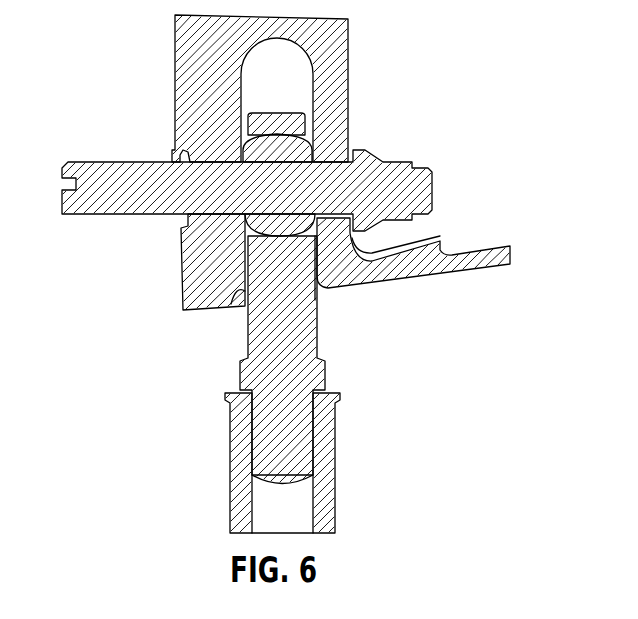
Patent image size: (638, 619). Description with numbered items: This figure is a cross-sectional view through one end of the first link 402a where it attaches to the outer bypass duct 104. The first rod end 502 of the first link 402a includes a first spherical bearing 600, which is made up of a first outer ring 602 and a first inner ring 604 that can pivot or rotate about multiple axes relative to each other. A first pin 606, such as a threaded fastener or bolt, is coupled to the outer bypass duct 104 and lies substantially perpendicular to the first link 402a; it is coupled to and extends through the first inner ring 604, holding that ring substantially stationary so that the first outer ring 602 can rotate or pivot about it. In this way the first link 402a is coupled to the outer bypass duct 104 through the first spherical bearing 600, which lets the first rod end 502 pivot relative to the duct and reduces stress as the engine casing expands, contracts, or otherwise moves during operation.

The outer bypass duct 104 is at (198, 70).
The first spherical bearing 600 is at (292, 97).
The first outer ring 602 is at (283, 138).
The first inner ring 604 is at (287, 152).
The first pin 606 is at (123, 177).
The first rod end 502 is at (273, 334).
The first link 402a is at (201, 373).